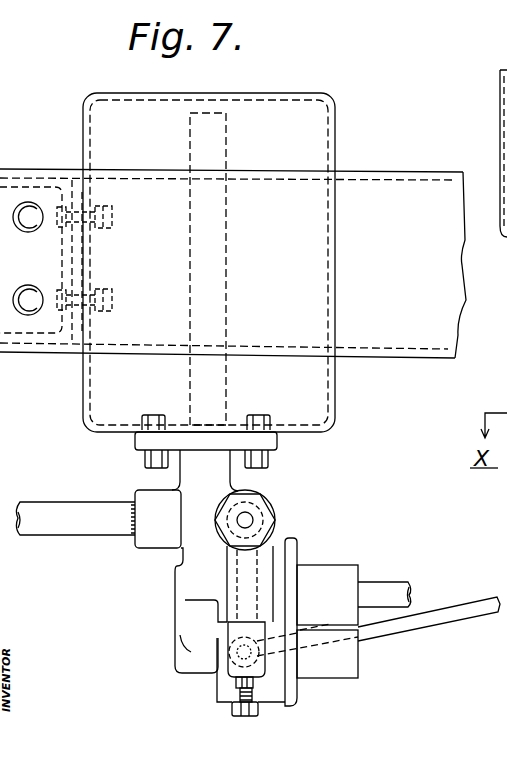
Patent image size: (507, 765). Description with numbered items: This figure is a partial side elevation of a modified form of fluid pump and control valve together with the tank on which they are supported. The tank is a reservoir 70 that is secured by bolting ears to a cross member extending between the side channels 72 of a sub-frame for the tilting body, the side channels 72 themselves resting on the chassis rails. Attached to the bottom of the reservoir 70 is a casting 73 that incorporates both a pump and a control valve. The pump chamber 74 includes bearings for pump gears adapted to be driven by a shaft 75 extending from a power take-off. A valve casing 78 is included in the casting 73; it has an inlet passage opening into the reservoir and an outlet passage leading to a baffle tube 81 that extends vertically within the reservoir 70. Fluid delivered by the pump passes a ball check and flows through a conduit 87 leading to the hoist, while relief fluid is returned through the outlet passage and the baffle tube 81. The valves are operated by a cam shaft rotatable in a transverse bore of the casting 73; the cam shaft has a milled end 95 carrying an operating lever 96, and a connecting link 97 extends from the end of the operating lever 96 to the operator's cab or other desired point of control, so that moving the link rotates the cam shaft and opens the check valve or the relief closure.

The reservoir 70 is at (318, 126).
The side channels 72 is at (449, 297).
The baffle tube 81 is at (226, 249).
The conduit 87 is at (48, 492).
The milled end 95 is at (263, 509).
The pump chamber 74 is at (285, 542).
The operating lever 96 is at (260, 583).
The shaft 75 is at (375, 588).
The valve casing 78 is at (190, 607).
The casting 73 is at (213, 667).
The connecting link 97 is at (462, 613).